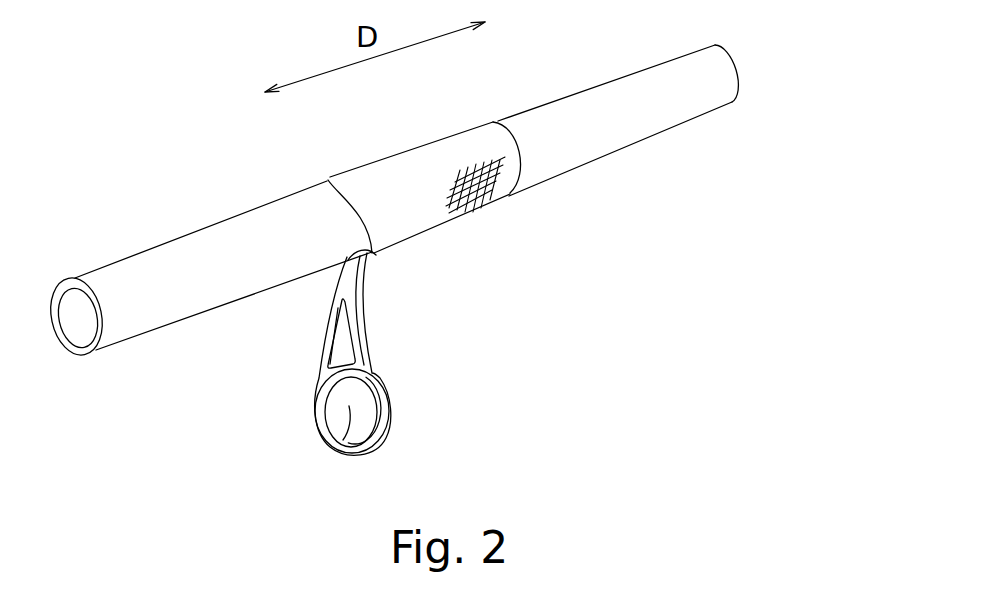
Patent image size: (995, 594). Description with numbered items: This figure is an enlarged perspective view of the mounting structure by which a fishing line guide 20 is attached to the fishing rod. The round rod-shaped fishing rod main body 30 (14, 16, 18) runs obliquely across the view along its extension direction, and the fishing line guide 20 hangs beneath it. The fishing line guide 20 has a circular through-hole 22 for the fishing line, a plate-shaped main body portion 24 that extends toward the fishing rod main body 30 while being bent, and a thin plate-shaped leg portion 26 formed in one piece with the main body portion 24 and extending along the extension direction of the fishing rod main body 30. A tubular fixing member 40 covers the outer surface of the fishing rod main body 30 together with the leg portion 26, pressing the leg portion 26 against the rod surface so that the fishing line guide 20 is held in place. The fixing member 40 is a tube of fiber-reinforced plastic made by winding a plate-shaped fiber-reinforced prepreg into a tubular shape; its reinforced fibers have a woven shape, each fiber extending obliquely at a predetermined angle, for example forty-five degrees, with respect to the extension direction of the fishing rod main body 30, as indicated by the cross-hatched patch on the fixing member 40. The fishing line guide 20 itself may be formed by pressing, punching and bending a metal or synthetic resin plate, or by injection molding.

The fishing line guide 20 is at (382, 368).
The circular through-hole 22 is at (343, 413).
The main body portion 24 is at (358, 351).
The leg portion 26 is at (376, 255).
The fishing rod main body 30 is at (625, 136).
The fishing rod main body 14 is at (448, 202).
The fishing rod main body 16 is at (448, 202).
The fishing rod main body 18 is at (448, 202).
The fixing member 40 is at (418, 167).